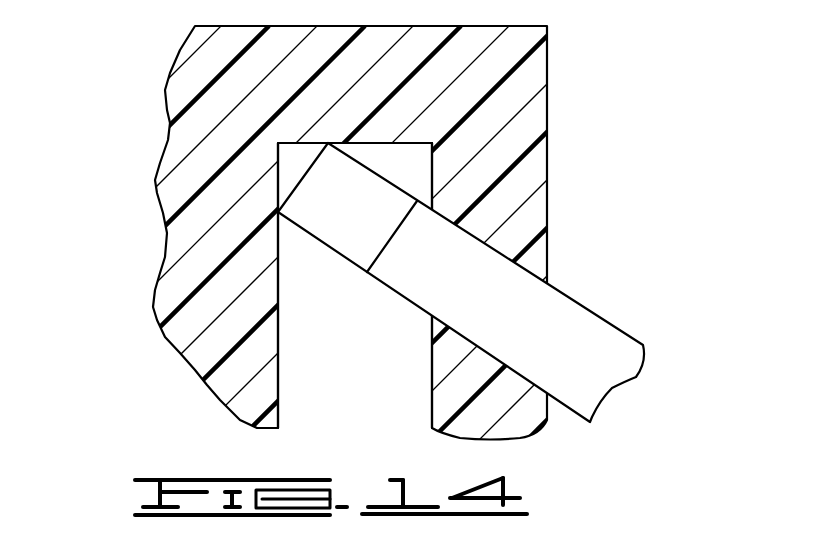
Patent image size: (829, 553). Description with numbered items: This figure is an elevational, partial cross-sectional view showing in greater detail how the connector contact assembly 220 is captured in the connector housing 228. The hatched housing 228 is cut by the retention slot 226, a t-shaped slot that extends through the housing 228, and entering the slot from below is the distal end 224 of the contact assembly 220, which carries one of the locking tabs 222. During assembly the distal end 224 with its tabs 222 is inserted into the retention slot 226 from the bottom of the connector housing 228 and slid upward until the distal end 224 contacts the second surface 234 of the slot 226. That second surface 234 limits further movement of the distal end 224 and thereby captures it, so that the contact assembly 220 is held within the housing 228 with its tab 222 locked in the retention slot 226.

The connector contact assembly 220 is at (414, 232).
The locking tab 222 is at (461, 282).
The distal end 224 is at (410, 287).
The retention slot 226 is at (328, 373).
The connector housing 228 is at (178, 223).
The second surface 234 is at (388, 143).